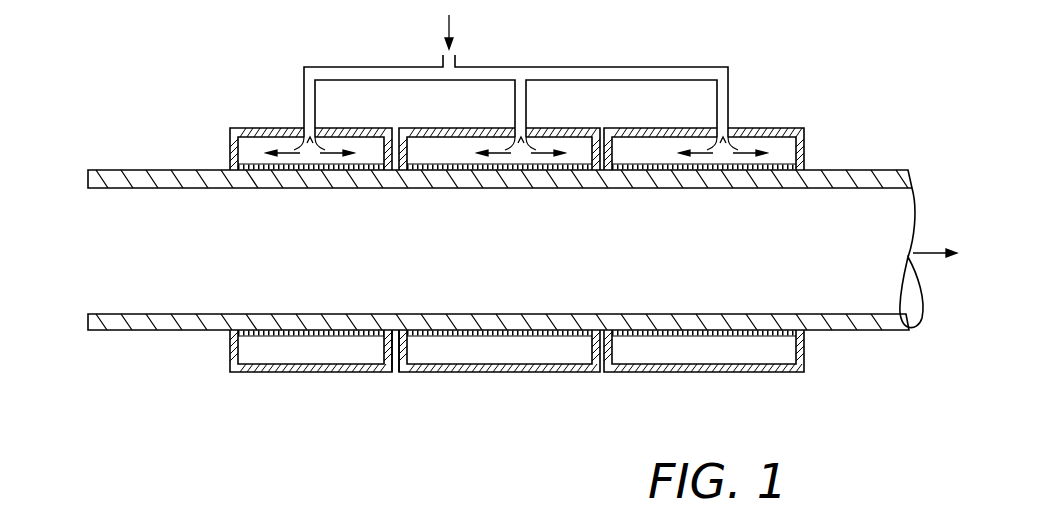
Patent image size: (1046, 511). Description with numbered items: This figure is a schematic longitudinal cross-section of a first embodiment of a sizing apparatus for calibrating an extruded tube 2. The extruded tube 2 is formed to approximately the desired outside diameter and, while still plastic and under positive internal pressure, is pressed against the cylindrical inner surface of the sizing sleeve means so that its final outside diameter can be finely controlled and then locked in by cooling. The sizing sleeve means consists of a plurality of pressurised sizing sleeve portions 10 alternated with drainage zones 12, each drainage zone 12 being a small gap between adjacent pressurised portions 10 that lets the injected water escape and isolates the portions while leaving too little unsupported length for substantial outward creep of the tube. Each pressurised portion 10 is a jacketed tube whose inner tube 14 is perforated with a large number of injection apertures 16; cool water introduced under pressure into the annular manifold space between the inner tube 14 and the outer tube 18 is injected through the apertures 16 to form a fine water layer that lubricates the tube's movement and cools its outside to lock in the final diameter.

The extruded tube 2 is at (853, 170).
The pressurised sizing sleeve portion 10 is at (265, 125).
The drainage zone 12 is at (397, 378).
The inner tube 14 is at (767, 339).
The injection apertures 16 is at (533, 337).
The outer tube 18 is at (730, 374).